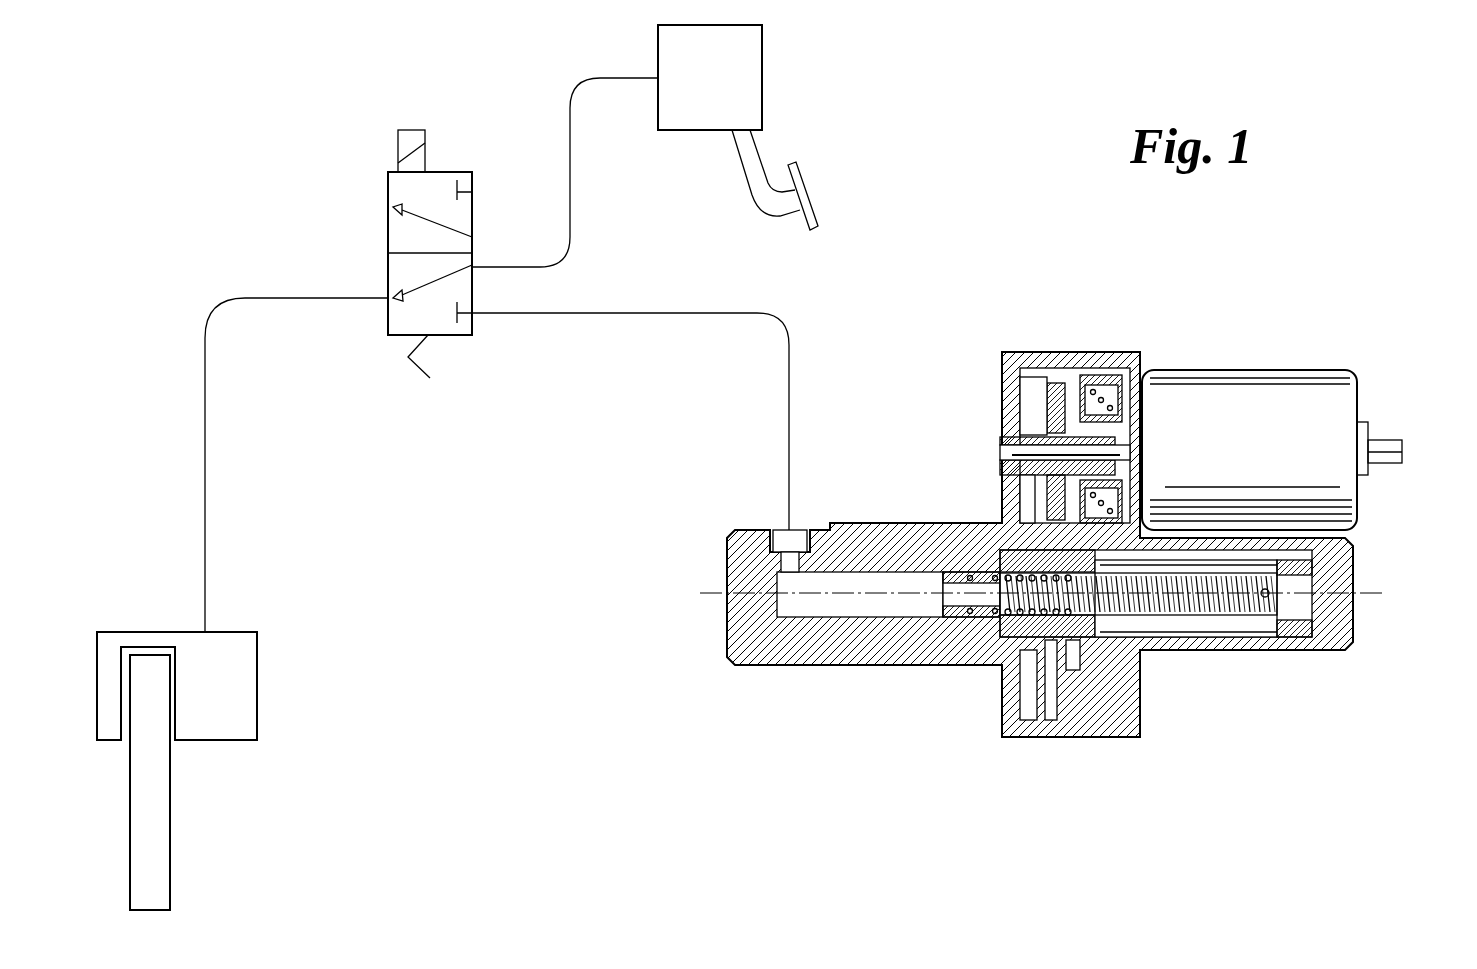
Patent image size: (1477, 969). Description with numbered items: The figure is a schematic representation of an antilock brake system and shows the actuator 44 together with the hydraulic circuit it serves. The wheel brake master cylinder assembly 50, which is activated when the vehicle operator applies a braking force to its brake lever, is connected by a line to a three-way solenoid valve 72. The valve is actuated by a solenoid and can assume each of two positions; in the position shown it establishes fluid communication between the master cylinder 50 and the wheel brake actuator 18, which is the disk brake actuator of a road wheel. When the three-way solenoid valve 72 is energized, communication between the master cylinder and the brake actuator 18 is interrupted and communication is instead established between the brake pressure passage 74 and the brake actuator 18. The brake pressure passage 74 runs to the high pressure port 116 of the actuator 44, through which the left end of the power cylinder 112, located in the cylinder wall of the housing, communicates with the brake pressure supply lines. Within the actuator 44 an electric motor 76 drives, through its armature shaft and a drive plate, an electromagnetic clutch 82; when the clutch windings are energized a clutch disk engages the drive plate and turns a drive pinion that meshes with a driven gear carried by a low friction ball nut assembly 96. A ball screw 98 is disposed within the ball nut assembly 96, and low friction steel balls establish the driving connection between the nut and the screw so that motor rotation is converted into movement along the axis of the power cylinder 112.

The brake actuator 18 is at (257, 690).
The actuator 44 is at (1079, 519).
The wheel brake master cylinder assembly 50 is at (747, 62).
The three-way solenoid valve 72 is at (458, 170).
The brake pressure passage 74 is at (790, 367).
The electric motor 76 is at (1240, 392).
The electromagnetic clutch 82 is at (1030, 389).
The ball nut assembly 96 is at (1027, 628).
The ball screw 98 is at (1227, 613).
The power cylinder 112 is at (857, 607).
The high pressure port 116 is at (797, 530).